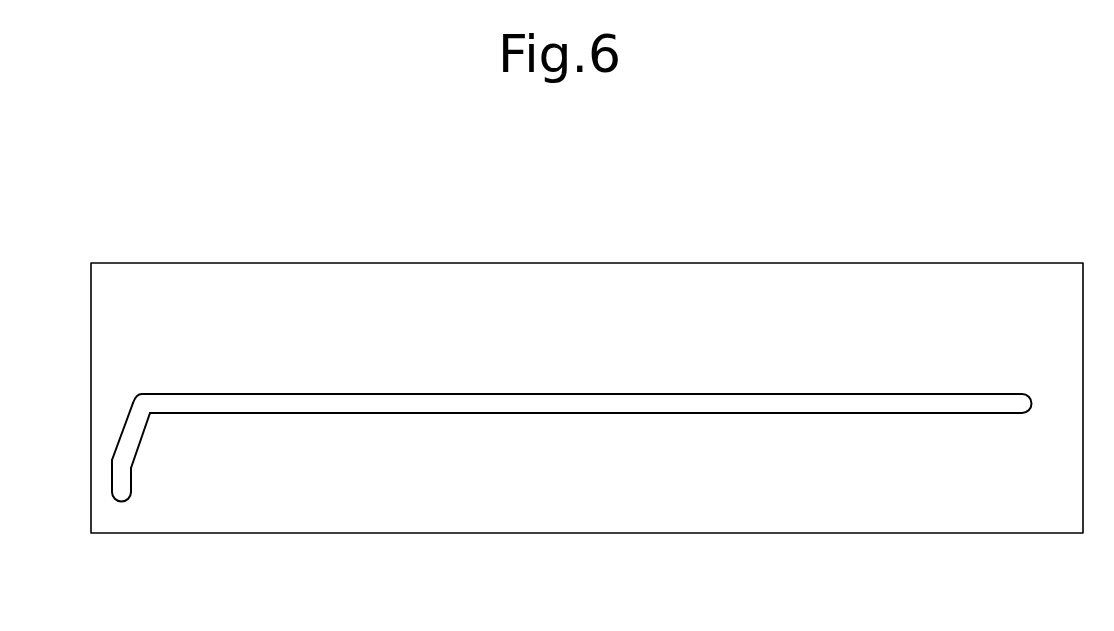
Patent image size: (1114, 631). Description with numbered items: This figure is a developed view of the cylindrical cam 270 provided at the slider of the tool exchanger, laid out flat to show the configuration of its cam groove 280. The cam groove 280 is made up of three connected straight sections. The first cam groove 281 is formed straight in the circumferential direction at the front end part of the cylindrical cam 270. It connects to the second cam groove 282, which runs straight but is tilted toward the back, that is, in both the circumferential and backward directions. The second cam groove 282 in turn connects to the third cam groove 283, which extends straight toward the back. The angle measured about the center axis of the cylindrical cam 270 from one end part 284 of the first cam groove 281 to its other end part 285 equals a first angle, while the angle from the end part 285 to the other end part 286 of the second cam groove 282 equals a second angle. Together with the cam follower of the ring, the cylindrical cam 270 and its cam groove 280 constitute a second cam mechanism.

The cylindrical cam 270 is at (626, 263).
The cam groove 280 is at (320, 162).
The first cam groove 281 is at (115, 480).
The second cam groove 282 is at (128, 421).
The third cam groove 283 is at (425, 400).
The one end part 284 is at (110, 496).
The other end part 285 is at (122, 465).
The other end part 286 is at (135, 395).